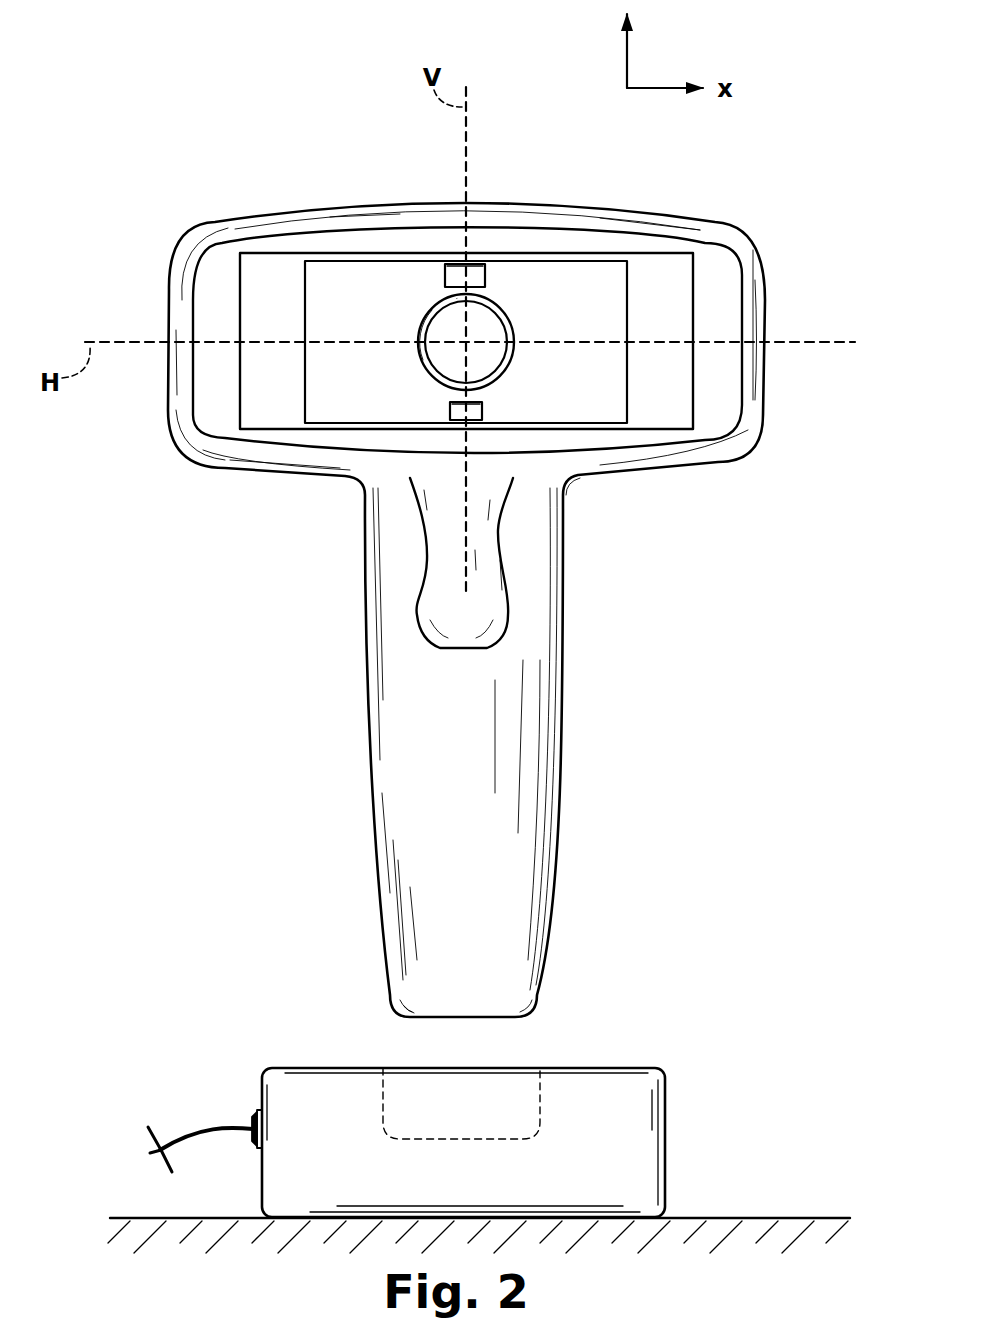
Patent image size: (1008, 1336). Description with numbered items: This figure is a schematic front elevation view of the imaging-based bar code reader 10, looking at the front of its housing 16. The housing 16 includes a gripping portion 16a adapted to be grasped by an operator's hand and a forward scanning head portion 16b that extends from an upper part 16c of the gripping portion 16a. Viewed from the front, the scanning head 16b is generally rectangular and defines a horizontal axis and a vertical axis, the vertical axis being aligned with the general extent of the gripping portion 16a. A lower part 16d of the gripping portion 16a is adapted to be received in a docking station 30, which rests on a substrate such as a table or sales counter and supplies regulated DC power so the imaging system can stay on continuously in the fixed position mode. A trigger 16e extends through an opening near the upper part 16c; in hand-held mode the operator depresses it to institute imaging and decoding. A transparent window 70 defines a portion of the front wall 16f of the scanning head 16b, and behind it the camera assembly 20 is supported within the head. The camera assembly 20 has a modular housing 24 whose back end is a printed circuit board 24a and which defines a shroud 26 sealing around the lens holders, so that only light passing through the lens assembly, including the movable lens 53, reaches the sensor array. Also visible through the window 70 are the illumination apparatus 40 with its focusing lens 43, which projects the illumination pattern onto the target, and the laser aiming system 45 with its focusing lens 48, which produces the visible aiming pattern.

The imaging-based bar code reader 10 is at (202, 122).
The housing 16 is at (332, 673).
The gripping portion 16a is at (566, 733).
The scanning head portion 16b is at (782, 402).
The upper part of gripping portion 16c is at (570, 488).
The lower part of gripping portion 16d is at (540, 990).
The trigger 16e is at (455, 590).
The front wall 16f is at (213, 395).
The camera assembly 20 is at (575, 243).
The camera assembly housing 24 is at (642, 321).
The printed circuit board 24a is at (428, 378).
The shroud 26 is at (503, 300).
The docking station 30 is at (666, 1130).
The illumination apparatus 40 is at (520, 275).
The focusing lens 43 is at (473, 272).
The laser aiming system 45 is at (500, 410).
The focusing lens of aiming system 48 is at (450, 412).
The movable lens 53 is at (455, 322).
The transparent window 70 is at (278, 390).